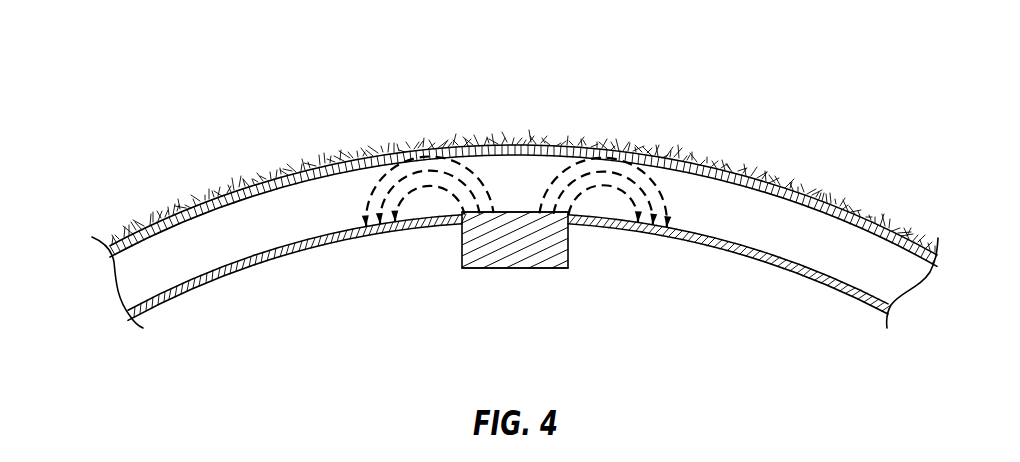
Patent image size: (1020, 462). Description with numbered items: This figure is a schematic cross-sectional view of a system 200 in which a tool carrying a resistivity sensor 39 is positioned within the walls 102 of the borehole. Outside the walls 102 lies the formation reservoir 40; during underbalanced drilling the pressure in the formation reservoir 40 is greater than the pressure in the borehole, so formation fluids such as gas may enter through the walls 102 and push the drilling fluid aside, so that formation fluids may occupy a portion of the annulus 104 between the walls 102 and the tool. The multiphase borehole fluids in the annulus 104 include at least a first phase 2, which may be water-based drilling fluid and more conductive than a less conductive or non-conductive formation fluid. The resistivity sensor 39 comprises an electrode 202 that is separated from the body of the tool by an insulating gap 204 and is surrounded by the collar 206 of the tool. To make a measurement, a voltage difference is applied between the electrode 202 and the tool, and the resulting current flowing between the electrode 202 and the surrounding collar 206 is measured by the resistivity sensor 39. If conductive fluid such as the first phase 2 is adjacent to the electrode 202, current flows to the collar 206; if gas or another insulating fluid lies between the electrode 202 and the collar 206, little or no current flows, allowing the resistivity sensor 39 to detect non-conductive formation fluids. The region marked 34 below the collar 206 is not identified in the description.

The system 200 is at (166, 90).
The formation reservoir 40 is at (382, 147).
The walls of the borehole 102 is at (283, 185).
The annulus of the borehole 104 is at (201, 232).
The first phase 2 is at (771, 236).
The interior bore 34 is at (656, 292).
The collar 206 is at (790, 260).
The electrode 202 is at (513, 269).
The insulating gap 204 is at (457, 226).
The resistivity sensor 39 is at (458, 277).